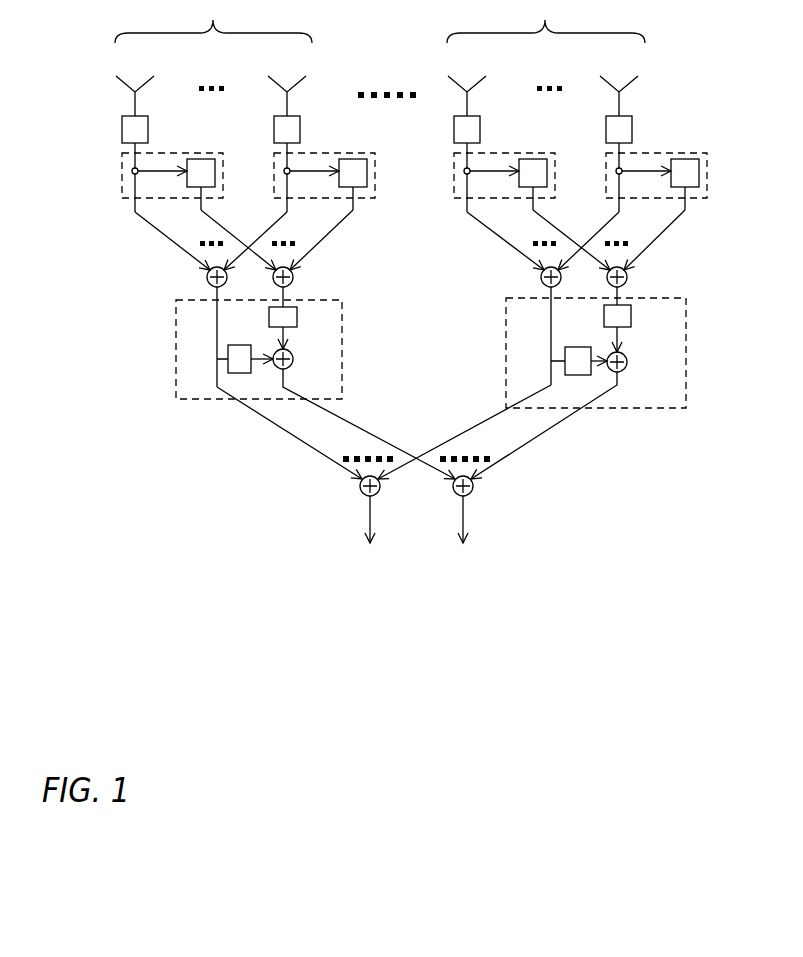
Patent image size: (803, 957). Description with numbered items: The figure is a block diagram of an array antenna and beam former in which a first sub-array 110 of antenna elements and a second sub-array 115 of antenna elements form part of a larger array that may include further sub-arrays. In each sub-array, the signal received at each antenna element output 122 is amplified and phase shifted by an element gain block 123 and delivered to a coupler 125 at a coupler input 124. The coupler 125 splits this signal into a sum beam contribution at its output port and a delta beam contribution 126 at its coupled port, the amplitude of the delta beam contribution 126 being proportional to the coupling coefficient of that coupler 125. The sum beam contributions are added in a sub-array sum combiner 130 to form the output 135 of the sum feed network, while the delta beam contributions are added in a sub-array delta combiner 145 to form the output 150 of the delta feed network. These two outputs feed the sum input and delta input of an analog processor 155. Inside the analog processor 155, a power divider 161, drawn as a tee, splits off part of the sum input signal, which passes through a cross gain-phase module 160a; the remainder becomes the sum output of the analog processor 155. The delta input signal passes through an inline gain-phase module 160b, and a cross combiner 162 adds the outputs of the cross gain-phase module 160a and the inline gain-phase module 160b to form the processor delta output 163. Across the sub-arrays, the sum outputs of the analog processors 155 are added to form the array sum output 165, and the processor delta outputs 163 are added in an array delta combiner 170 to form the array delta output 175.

The first sub-array 110 is at (213, 21).
The second sub-array 115 is at (546, 21).
The antenna element output 122 is at (130, 104).
The element gain block 123 is at (122, 130).
The coupler input 124 is at (122, 154).
The coupler 125 is at (122, 182).
The delta beam contribution 126 is at (214, 213).
The sub-array sum combiner 130 is at (206, 272).
The output of the sum feed network 135 is at (210, 297).
The sub-array delta combiner 145 is at (294, 272).
The output of the delta feed network 150 is at (286, 297).
The analog processor 155 is at (176, 350).
The power divider 161 is at (215, 357).
The cross gain-phase module 160a is at (230, 373).
The inline gain-phase module 160b is at (298, 327).
The cross combiner 162 is at (292, 366).
The processor delta output 163 is at (336, 416).
The array sum output 165 is at (366, 521).
The array delta combiner 170 is at (475, 494).
The array delta output 175 is at (468, 522).